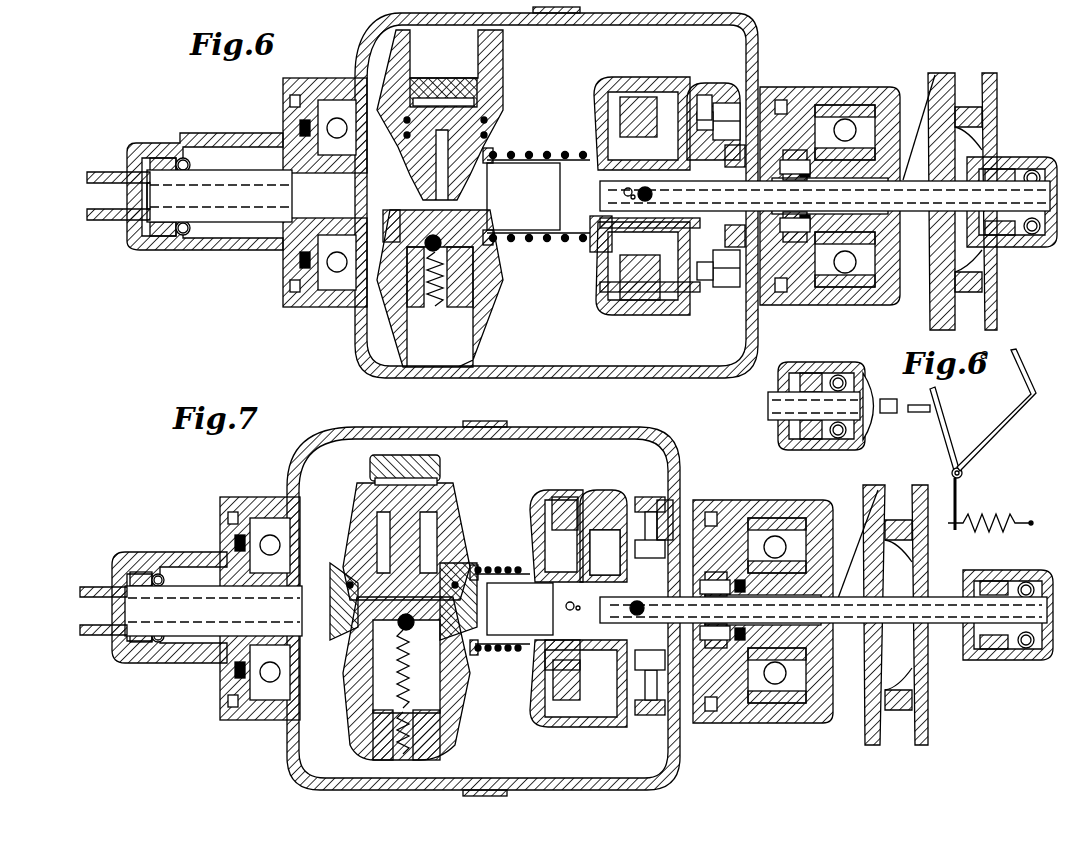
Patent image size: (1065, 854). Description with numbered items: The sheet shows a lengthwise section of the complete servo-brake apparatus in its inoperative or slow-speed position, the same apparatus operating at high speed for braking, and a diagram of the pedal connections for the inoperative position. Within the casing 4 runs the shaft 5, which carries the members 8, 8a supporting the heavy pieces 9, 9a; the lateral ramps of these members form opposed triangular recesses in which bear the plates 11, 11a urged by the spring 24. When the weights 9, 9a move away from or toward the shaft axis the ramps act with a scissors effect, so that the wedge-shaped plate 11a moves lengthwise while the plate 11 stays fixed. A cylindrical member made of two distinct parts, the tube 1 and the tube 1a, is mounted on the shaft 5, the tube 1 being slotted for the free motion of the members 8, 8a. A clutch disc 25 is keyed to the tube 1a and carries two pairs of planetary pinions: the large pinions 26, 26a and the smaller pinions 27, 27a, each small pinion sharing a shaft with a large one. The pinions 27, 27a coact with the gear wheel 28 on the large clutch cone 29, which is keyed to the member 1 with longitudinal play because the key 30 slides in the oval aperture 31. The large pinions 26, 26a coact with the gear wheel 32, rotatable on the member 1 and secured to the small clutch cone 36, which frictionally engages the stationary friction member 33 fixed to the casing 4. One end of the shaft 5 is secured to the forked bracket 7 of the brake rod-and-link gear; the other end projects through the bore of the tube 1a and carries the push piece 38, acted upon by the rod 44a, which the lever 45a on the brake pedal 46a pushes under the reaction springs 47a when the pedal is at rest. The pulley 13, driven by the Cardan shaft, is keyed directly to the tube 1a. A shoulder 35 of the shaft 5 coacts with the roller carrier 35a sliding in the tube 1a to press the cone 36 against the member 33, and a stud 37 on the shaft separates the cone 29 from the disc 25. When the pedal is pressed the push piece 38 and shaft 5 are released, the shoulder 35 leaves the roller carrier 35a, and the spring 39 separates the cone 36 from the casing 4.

In FIG. 6, the tube 1 is at (368, 159).
In FIG. 7, the tube 1 is at (310, 581).
In FIG. 6, the tube 1a is at (903, 283).
In FIG. 7, the tube 1a is at (823, 621).
In FIG. 6, the casing 4 is at (748, 46).
In FIG. 7, the casing 4 is at (670, 448).
In FIG. 6, the shaft 5 is at (523, 196).
In FIG. 7, the shaft 5 is at (520, 609).
In FIG. 6, the forked bracket 7 is at (133, 231).
In FIG. 7, the forked bracket 7 is at (124, 640).
In FIG. 6, the member 8 is at (494, 310).
In FIG. 7, the member 8 is at (455, 697).
In FIG. 6, the member 8a is at (494, 68).
In FIG. 7, the member 8a is at (458, 512).
In FIG. 6, the heavy piece 9 is at (420, 80).
In FIG. 7, the heavy piece 9 is at (440, 465).
In FIG. 6, the heavy piece 9a is at (458, 320).
In FIG. 7, the heavy piece 9a is at (445, 748).
In FIG. 6, the plate 11 is at (392, 242).
In FIG. 7, the plate 11 is at (330, 668).
In FIG. 6, the plate 11a is at (492, 243).
In FIG. 7, the plate 11a is at (466, 660).
In FIG. 6, the pulley 13 is at (948, 98).
In FIG. 7, the pulley 13 is at (878, 497).
In FIG. 6, the spring 24 is at (525, 155).
In FIG. 7, the spring 24 is at (495, 568).
In FIG. 6, the clutch disc 25 is at (697, 84).
In FIG. 7, the clutch disc 25 is at (594, 490).
In FIG. 6, the pinion 26 is at (724, 103).
In FIG. 7, the pinion 26 is at (642, 500).
In FIG. 6, the pinion 26a is at (706, 300).
In FIG. 7, the pinion 26a is at (646, 727).
In FIG. 6, the pinion 27 is at (636, 97).
In FIG. 7, the pinion 27 is at (560, 500).
In FIG. 6, the pinion 27a is at (637, 300).
In FIG. 7, the pinion 27a is at (576, 727).
In FIG. 6, the gear wheel 28 is at (598, 252).
In FIG. 7, the gear wheel 28 is at (546, 671).
In FIG. 6, the clutch cone 29 is at (598, 87).
In FIG. 7, the clutch cone 29 is at (536, 506).
In FIG. 6, the key 30 is at (630, 197).
In FIG. 7, the key 30 is at (582, 609).
In FIG. 6, the oval aperture 31 is at (626, 190).
In FIG. 7, the oval aperture 31 is at (565, 608).
In FIG. 6, the gear wheel 32 is at (708, 94).
In FIG. 7, the gear wheel 32 is at (632, 556).
In FIG. 7, the stationary friction member 33 is at (735, 503).
In FIG. 7, the shoulder 35 is at (782, 605).
In FIG. 6, the roller carrier 35a is at (773, 196).
In FIG. 7, the roller carrier 35a is at (730, 610).
In FIG. 6, the clutch cone 36 is at (776, 132).
In FIG. 7, the clutch cone 36 is at (712, 547).
In FIG. 6, the stud 37 is at (654, 194).
In FIG. 7, the stud 37 is at (646, 609).
In FIG. 6, the push piece 38 is at (1044, 160).
In FIG. 6A, the push piece 38 is at (848, 374).
In FIG. 7, the push piece 38 is at (1040, 572).
In FIG. 6, the spring 39 is at (728, 305).
In FIG. 7, the spring 39 is at (665, 545).
In FIG. 6A, the rod 44a is at (906, 414).
In FIG. 6A, the lever 45a is at (946, 432).
In FIG. 6A, the brake pedal 46a is at (1011, 362).
In FIG. 6A, the reaction spring 47a is at (986, 520).